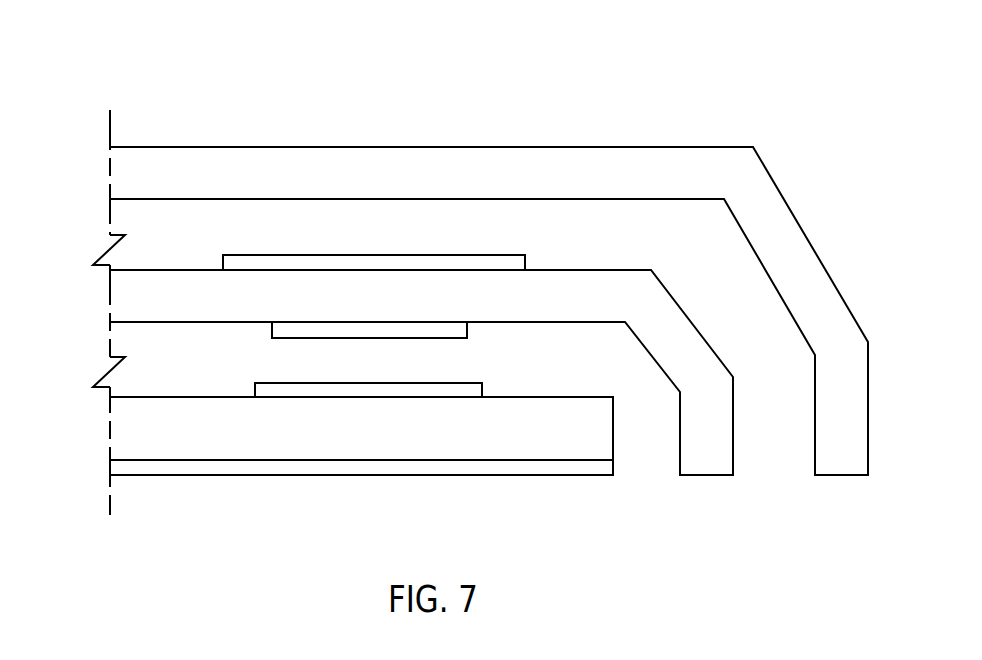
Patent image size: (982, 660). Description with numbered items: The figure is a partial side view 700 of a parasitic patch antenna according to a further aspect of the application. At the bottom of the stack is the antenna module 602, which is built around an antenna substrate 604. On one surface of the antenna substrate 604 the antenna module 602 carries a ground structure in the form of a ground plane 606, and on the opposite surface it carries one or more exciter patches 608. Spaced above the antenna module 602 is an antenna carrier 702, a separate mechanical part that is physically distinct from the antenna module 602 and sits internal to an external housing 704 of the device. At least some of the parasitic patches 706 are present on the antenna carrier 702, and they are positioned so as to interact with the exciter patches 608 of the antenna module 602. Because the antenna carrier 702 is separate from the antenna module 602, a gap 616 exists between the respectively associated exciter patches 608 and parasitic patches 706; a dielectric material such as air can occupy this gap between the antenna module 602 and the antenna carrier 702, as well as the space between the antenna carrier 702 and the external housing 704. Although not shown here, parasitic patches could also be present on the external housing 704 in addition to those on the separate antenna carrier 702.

The partial side view 700 is at (123, 73).
The antenna module 602 is at (85, 378).
The antenna substrate 604 is at (320, 440).
The ground plane 606 is at (232, 470).
The exciter patch 608 is at (442, 390).
The gap 616 is at (165, 353).
The antenna carrier 702 is at (705, 463).
The external housing 704 is at (840, 463).
The parasitic patch 706 is at (375, 253).